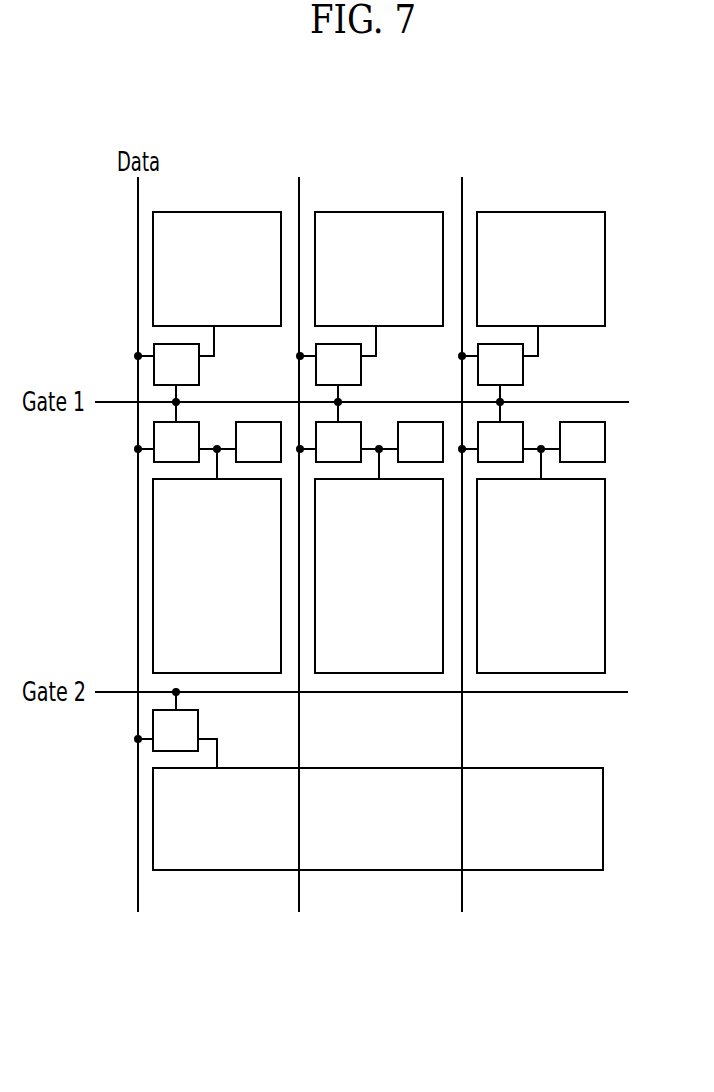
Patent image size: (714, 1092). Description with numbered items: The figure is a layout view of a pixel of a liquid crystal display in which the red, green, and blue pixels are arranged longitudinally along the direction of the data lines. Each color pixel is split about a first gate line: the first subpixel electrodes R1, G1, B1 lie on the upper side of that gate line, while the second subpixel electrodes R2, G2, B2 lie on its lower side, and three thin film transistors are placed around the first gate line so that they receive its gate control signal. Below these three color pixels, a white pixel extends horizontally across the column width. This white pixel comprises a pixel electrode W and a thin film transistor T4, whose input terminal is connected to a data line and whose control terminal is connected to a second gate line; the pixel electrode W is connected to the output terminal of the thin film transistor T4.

The first subpixel electrode R1 is at (217, 269).
The first subpixel electrode G1 is at (379, 269).
The first subpixel electrode B1 is at (541, 269).
The second subpixel electrode R2 is at (217, 576).
The second subpixel electrode G2 is at (379, 576).
The second subpixel electrode B2 is at (541, 576).
The pixel electrode W is at (378, 819).
The thin film transistor T4 is at (176, 728).